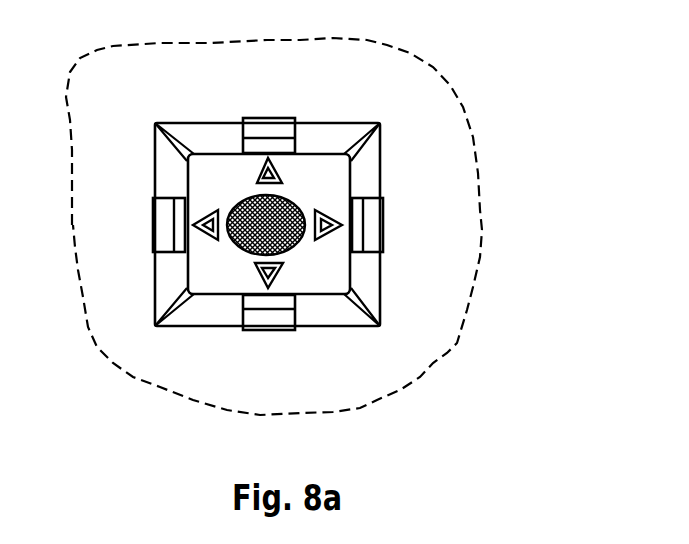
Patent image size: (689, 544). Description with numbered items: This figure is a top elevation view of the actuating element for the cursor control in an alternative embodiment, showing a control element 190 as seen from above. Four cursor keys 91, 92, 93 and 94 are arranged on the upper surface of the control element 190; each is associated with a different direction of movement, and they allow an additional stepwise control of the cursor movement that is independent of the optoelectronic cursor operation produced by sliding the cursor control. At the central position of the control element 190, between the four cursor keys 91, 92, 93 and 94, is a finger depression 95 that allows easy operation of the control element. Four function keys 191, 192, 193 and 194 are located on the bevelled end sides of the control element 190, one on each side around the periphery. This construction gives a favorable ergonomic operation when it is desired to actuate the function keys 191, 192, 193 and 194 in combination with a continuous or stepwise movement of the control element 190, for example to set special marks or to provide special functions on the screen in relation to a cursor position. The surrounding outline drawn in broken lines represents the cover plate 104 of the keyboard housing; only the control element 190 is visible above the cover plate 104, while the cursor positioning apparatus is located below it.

The cursor key 91 is at (262, 173).
The cursor key 92 is at (325, 233).
The cursor key 93 is at (270, 270).
The cursor key 94 is at (212, 233).
The finger depression 95 is at (300, 201).
The cover plate 104 is at (437, 342).
The control element 190 is at (330, 137).
The function key 191 is at (260, 130).
The function key 192 is at (373, 228).
The function key 193 is at (262, 320).
The function key 194 is at (160, 223).